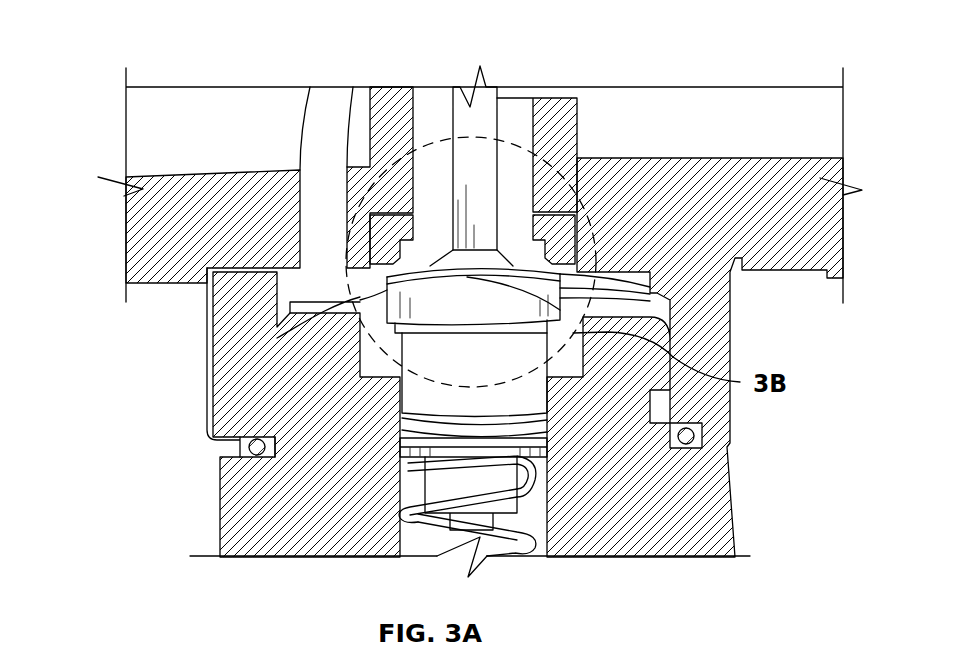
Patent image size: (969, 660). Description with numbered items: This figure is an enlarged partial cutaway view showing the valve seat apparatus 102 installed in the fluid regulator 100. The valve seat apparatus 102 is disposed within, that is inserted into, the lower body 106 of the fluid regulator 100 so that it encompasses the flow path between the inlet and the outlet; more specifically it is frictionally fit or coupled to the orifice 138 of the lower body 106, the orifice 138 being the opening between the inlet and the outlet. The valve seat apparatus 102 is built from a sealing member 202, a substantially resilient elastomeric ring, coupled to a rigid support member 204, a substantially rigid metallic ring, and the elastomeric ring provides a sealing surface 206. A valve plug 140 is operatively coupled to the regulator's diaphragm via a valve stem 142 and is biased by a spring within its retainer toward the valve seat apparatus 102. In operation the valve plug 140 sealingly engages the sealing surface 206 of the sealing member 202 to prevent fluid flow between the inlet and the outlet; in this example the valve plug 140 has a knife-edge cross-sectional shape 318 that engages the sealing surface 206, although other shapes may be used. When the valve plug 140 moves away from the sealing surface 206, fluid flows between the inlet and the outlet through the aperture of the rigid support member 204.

The fluid regulator 100 is at (135, 46).
The valve seat apparatus 102 is at (617, 208).
The lower body 106 is at (833, 227).
The orifice 138 is at (433, 221).
The valve plug 140 is at (425, 393).
The valve stem 142 is at (465, 128).
The sealing member 202 is at (557, 222).
The rigid support member 204 is at (538, 222).
The sealing surface 206 is at (277, 337).
The knife-edge cross-sectional shape 318 is at (565, 311).